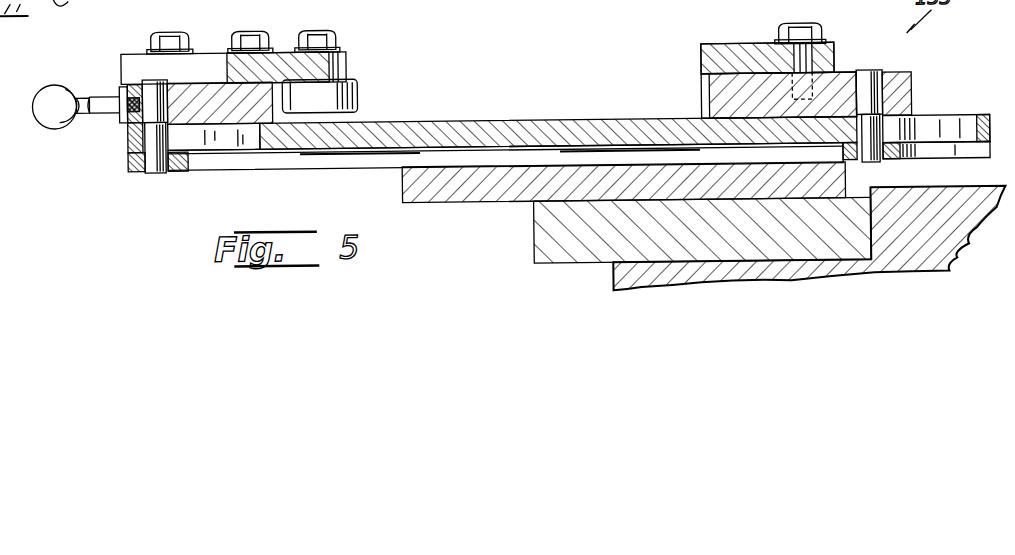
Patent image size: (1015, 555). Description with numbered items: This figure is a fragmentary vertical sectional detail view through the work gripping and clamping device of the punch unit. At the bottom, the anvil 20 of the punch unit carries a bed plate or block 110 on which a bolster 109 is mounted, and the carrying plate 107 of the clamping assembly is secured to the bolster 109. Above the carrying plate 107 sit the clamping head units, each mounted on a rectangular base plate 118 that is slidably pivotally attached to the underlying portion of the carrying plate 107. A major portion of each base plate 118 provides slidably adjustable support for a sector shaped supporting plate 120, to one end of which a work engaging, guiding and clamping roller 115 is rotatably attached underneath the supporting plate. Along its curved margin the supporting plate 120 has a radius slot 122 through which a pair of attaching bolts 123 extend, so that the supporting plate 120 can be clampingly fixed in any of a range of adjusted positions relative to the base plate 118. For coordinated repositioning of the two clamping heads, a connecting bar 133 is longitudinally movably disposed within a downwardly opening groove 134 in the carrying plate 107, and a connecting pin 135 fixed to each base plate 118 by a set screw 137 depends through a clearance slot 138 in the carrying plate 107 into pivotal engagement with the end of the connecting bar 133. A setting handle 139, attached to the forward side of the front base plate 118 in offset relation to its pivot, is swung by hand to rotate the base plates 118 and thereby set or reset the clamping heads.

The anvil 20 is at (953, 252).
The carrying plate 107 is at (562, 122).
The bolster 109 is at (478, 192).
The bed plate or block 110 is at (578, 250).
The clamping roller 115 is at (358, 93).
The base plate 118 is at (197, 84).
The supporting plate 120 is at (277, 54).
The radius slot 122 is at (832, 48).
The attaching bolts 123 is at (802, 35).
The connecting bar 133 is at (267, 160).
The groove 134 is at (953, 158).
The pin 135 is at (135, 121).
The set screw 137 is at (157, 111).
The clearance slot 138 is at (233, 137).
The setting handle 139 is at (54, 127).